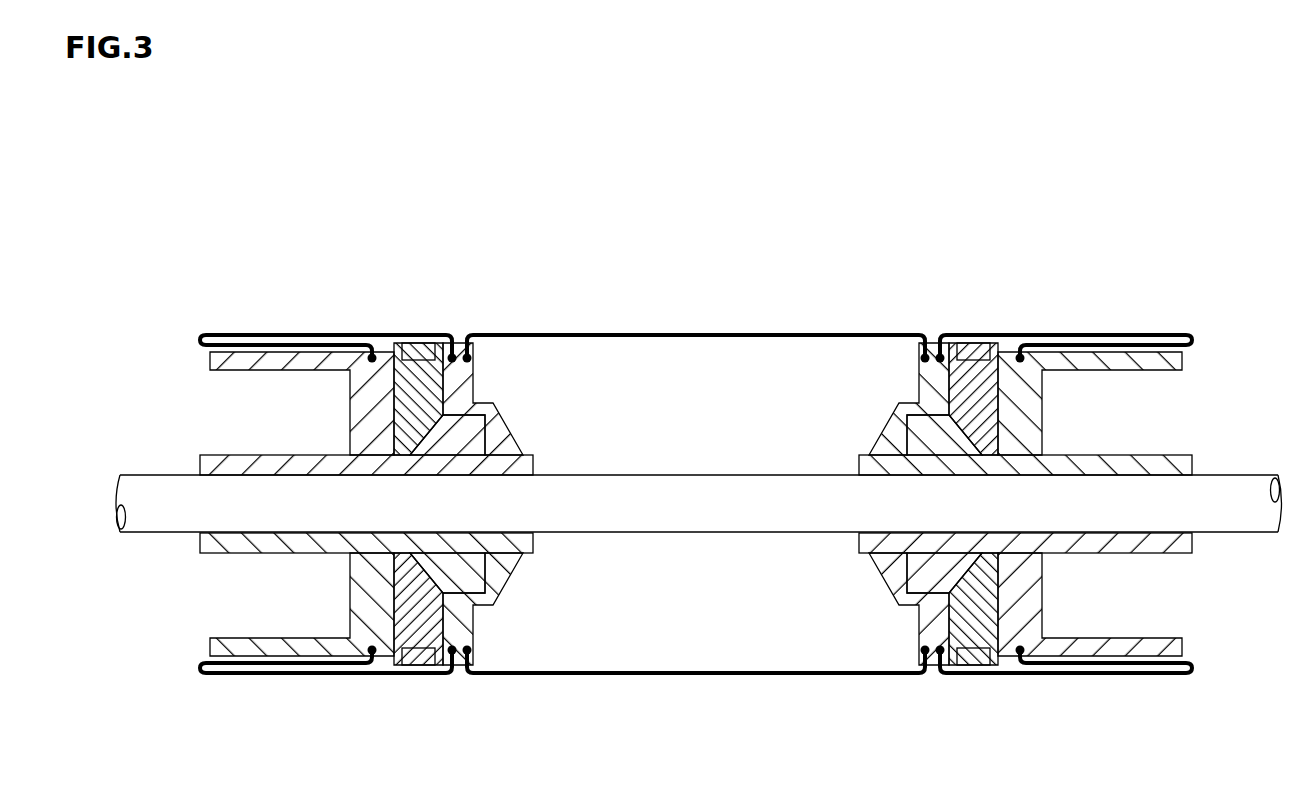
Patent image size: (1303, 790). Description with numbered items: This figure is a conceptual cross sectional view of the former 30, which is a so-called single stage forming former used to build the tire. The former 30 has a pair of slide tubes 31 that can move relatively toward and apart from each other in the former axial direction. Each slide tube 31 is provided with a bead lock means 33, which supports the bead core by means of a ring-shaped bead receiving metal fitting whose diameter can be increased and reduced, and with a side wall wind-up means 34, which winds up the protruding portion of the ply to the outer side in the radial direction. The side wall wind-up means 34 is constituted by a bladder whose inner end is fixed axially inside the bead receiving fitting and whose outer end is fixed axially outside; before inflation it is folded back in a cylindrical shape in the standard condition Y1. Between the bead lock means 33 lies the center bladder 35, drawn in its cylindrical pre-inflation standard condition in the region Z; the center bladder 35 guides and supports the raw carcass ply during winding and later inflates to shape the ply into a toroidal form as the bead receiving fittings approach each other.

The former 30 is at (377, 288).
The slide tube 31 is at (243, 455).
The bead lock means 33 is at (972, 385).
The side wall wind-up means 34 is at (1097, 333).
The center bladder 35 is at (561, 333).
The region Z is at (512, 317).
The standard condition Y1 is at (1147, 325).